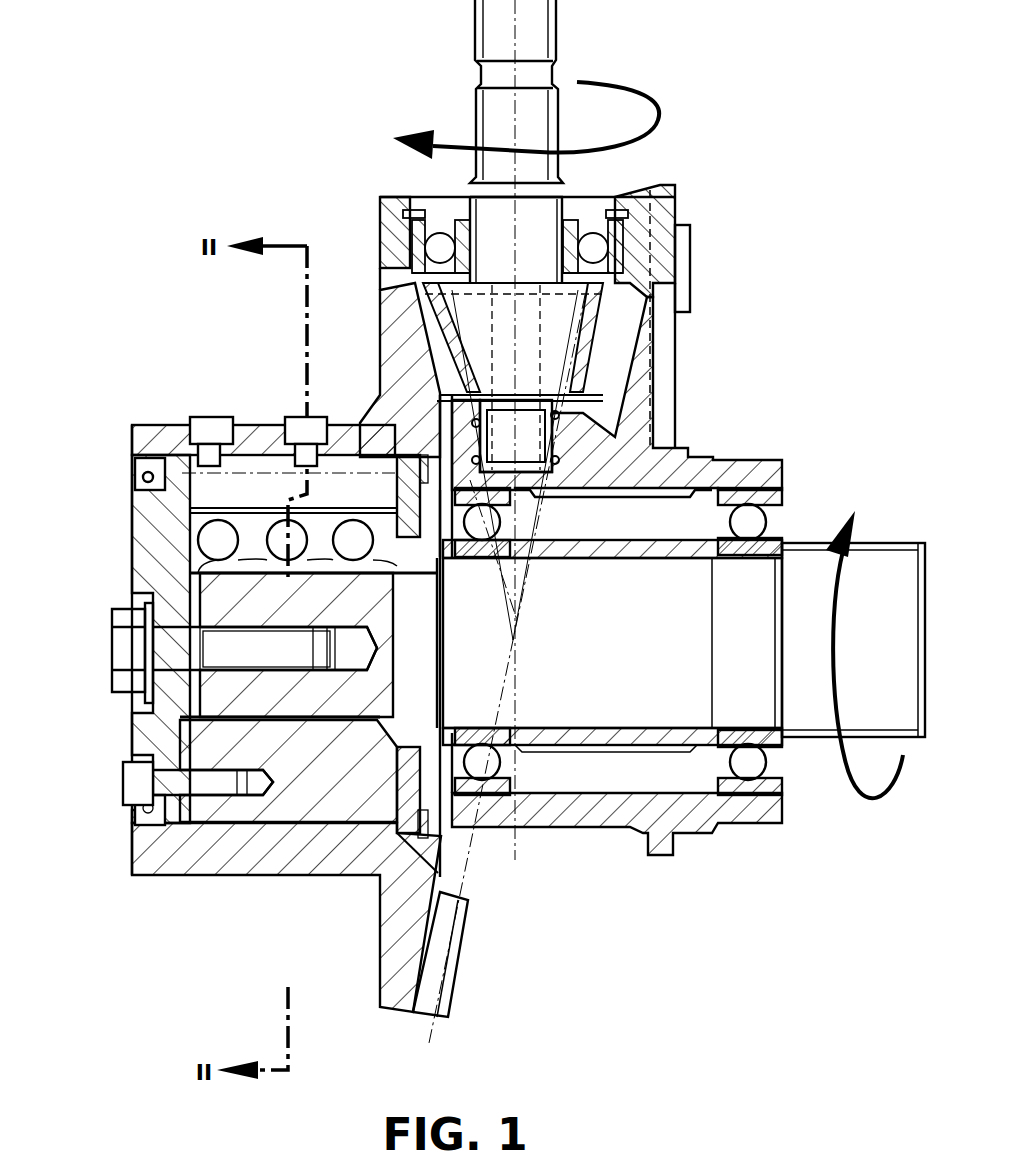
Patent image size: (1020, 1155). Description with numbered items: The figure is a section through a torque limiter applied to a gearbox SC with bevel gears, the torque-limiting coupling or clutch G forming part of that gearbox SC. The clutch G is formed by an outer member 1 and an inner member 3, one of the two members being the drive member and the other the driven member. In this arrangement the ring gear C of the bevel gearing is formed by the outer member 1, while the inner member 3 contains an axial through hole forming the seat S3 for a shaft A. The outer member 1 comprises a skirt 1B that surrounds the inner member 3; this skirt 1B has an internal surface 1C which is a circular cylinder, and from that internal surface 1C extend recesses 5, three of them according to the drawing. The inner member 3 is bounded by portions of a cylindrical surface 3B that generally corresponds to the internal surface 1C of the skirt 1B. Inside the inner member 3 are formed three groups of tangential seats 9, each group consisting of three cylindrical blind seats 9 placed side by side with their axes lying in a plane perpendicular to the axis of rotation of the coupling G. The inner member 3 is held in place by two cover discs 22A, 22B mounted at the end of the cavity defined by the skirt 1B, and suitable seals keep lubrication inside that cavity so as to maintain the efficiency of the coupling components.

The outer member 1 is at (155, 413).
The torque-limiting coupling G is at (225, 393).
The recesses 5 is at (364, 468).
The tangential seats 9 is at (207, 543).
The seat S3 is at (193, 588).
The inner member 3 is at (200, 748).
The cover disc 22A is at (138, 753).
The internal surface 1C is at (197, 812).
The skirt 1B is at (228, 857).
The cylindrical surface 3B is at (265, 820).
The cover disc 22B is at (402, 793).
The shaft A is at (757, 703).
The ring gear C is at (445, 990).
The gearbox SC is at (707, 405).